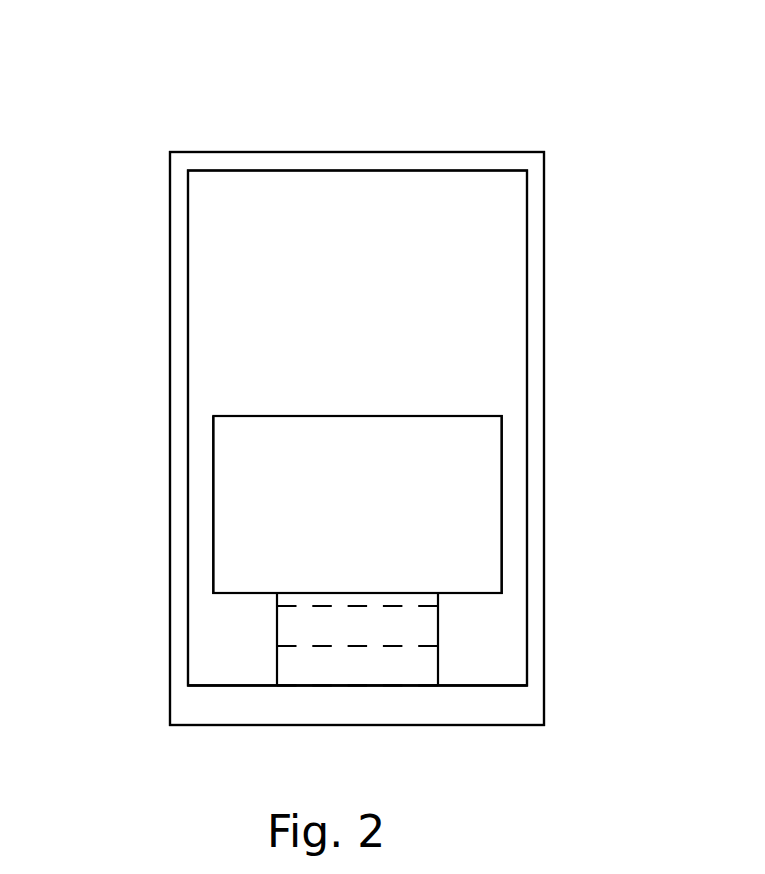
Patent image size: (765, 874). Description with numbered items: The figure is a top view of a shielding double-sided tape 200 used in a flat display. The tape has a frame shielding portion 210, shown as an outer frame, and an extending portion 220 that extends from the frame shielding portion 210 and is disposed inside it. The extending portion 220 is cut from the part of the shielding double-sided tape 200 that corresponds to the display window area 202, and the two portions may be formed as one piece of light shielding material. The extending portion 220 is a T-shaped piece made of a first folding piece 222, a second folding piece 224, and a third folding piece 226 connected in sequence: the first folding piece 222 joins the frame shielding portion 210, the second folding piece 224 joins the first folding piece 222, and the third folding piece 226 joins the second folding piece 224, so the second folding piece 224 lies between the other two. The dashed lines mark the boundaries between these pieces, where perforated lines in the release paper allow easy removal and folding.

The shielding double-sided tape 200 is at (128, 81).
The display window area 202 is at (527, 268).
The frame shielding portion 210 is at (537, 313).
The extending portion 220 is at (78, 562).
The first folding piece 222 is at (295, 665).
The second folding piece 224 is at (295, 624).
The third folding piece 226 is at (232, 553).